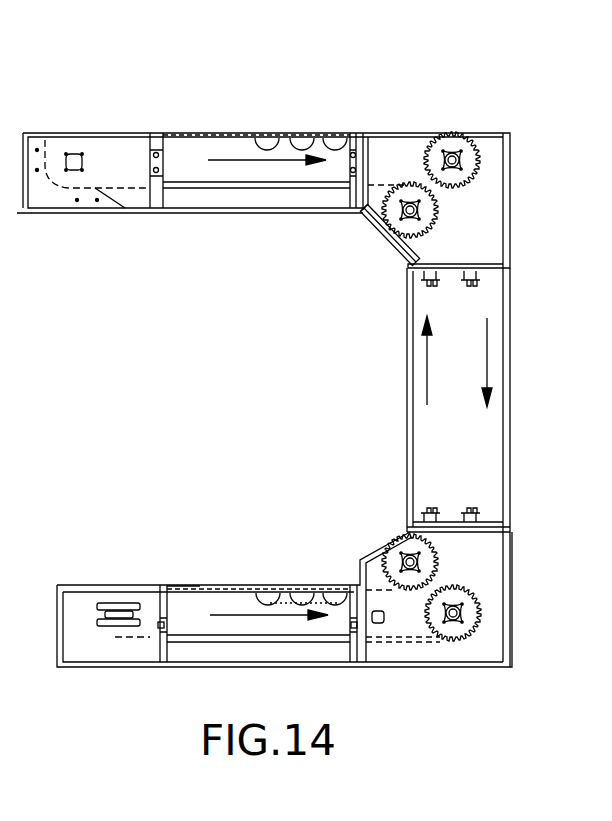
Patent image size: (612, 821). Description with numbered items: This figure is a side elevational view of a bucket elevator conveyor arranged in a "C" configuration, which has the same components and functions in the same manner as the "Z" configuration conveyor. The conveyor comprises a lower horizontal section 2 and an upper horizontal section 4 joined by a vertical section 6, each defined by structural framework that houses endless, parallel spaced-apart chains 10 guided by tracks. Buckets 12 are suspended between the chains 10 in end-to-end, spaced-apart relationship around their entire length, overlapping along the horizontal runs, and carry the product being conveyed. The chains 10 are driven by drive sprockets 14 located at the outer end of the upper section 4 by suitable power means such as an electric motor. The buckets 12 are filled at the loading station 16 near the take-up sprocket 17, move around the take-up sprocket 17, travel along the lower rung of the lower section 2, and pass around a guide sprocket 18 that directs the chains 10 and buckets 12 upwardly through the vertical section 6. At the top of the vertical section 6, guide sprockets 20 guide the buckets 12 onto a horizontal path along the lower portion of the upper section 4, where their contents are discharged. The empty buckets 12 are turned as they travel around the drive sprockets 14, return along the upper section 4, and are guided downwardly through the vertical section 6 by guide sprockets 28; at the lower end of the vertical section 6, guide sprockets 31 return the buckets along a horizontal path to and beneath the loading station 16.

The lower horizontal section 2 is at (121, 565).
The upper horizontal section 4 is at (184, 122).
The vertical section 6 is at (395, 377).
The chains 10 is at (290, 132).
The buckets 12 is at (283, 590).
The drive sprockets 14 is at (70, 138).
The loading station 16 is at (178, 565).
The take-up sprocket 17 is at (106, 628).
The guide sprocket 18 is at (460, 613).
The guide sprockets 20 is at (395, 214).
The guide sprockets 28 is at (462, 135).
The guide sprockets 31 is at (410, 545).